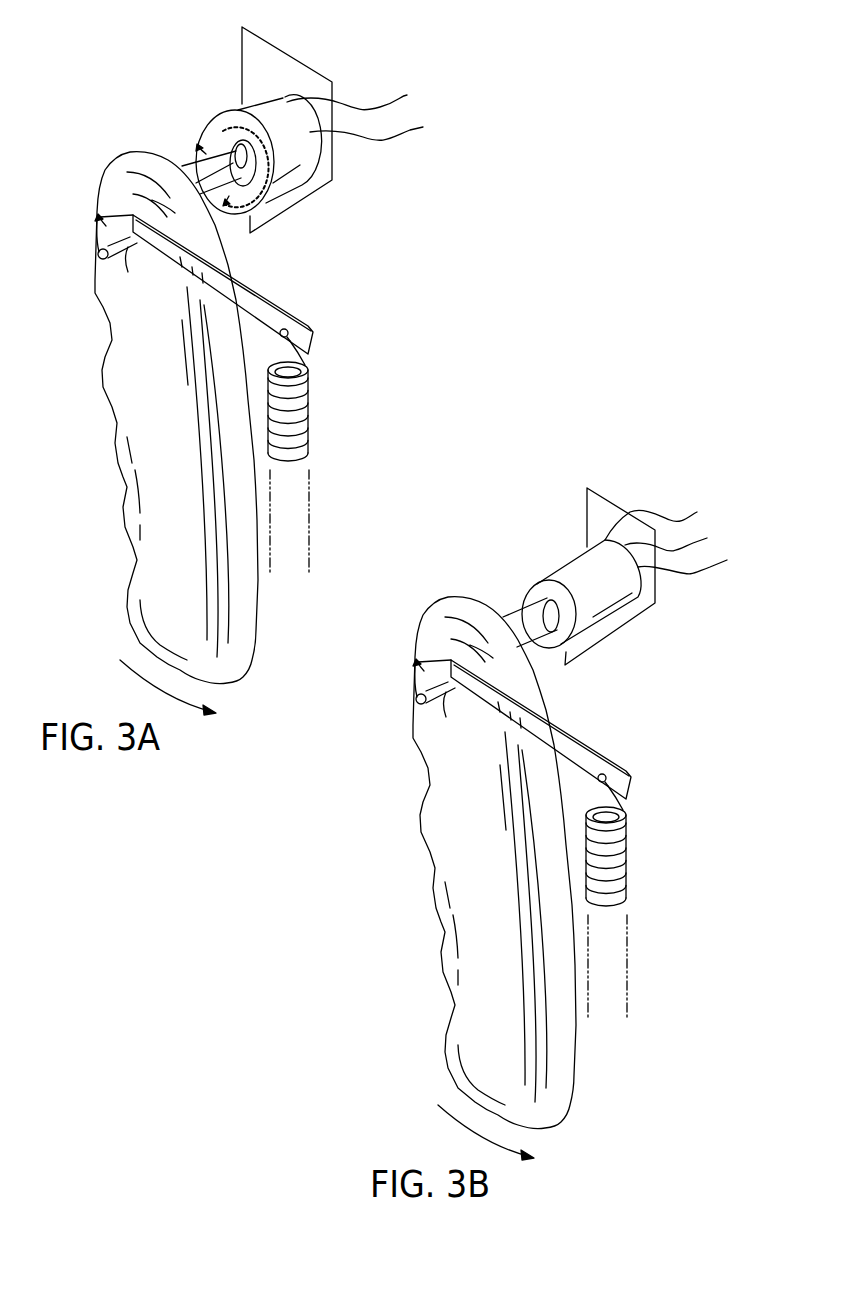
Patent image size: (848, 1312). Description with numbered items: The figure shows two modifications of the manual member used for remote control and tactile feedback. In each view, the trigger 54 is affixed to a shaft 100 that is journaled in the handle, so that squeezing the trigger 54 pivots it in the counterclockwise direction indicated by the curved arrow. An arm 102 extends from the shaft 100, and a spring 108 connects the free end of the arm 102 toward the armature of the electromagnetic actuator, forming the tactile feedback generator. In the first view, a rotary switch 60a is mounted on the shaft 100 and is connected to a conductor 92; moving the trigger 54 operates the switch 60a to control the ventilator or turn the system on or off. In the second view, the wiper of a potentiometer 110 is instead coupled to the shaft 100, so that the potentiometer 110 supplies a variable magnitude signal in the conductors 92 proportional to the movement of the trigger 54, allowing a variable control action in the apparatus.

In FIG. 3A, the trigger 54 is at (133, 570).
In FIG. 3B, the trigger 54 is at (481, 863).
In FIG. 3A, the rotary switch 60a is at (232, 117).
In FIG. 3A, the conductor 92 is at (382, 140).
In FIG. 3B, the conductor 92 is at (666, 520).
In FIG. 3A, the shaft 100 is at (94, 241).
In FIG. 3B, the shaft 100 is at (397, 685).
In FIG. 3A, the arm 102 is at (258, 290).
In FIG. 3B, the arm 102 is at (543, 729).
In FIG. 3A, the spring 108 is at (312, 418).
In FIG. 3B, the spring 108 is at (636, 903).
In FIG. 3B, the potentiometer 110 is at (569, 589).